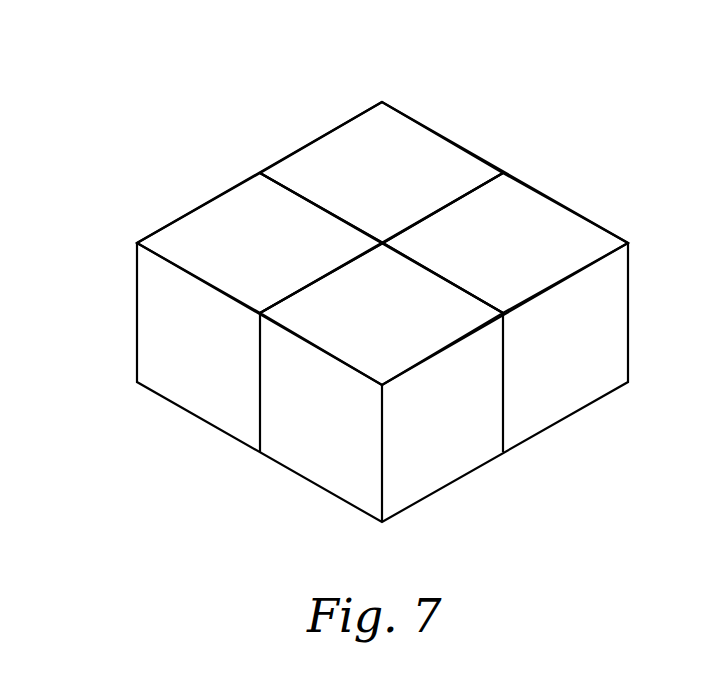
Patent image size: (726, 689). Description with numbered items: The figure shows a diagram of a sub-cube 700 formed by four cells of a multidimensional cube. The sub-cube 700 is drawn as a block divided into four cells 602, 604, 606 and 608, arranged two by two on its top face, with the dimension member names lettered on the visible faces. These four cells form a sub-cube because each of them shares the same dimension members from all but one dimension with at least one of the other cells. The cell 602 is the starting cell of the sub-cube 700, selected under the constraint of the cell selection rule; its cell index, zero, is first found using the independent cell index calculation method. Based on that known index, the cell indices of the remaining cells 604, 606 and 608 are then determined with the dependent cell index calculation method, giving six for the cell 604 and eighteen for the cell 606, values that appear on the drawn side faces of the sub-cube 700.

The sub-cube 700 is at (138, 100).
The cell 602 is at (428, 327).
The cell 604 is at (573, 237).
The cell 606 is at (210, 223).
The cell 608 is at (413, 132).